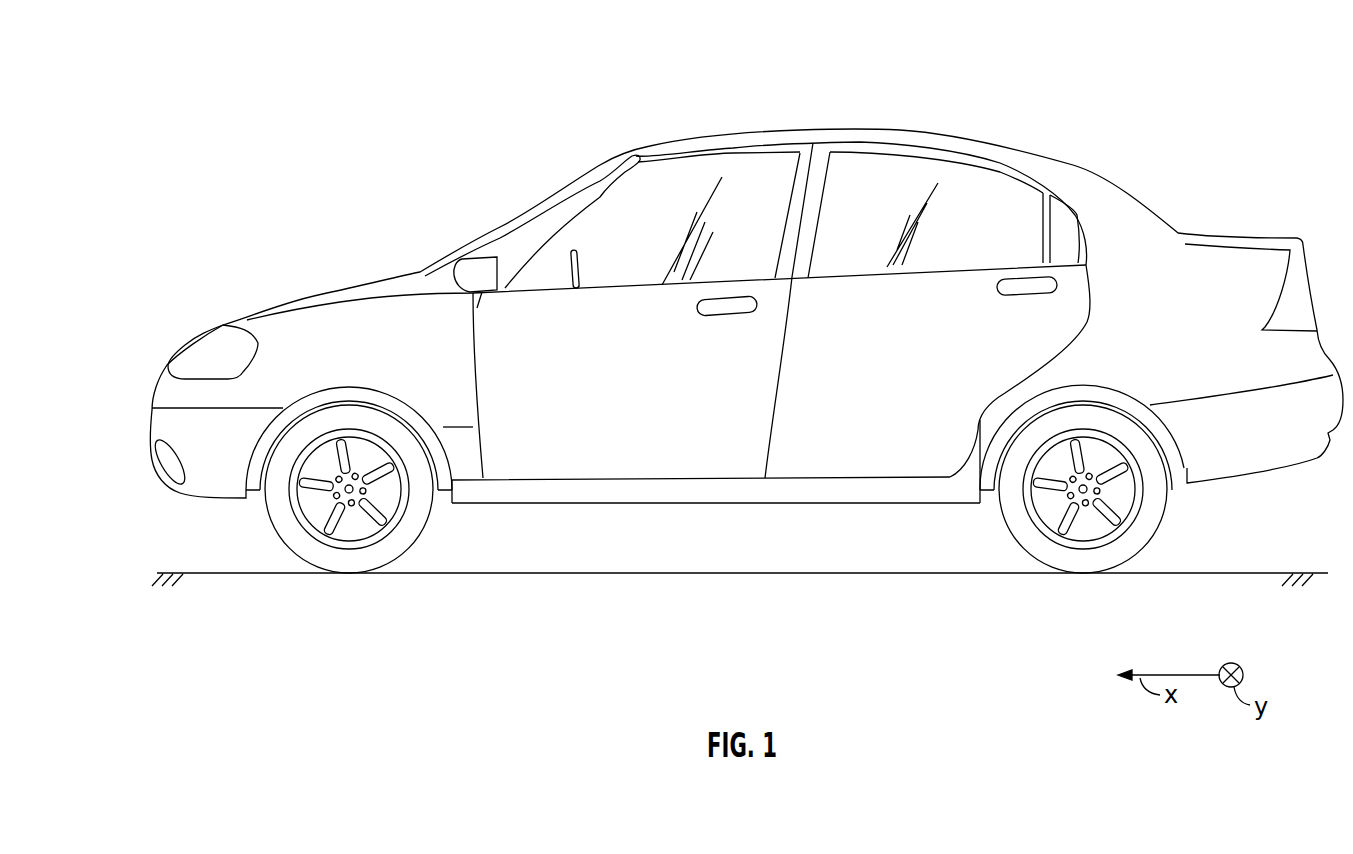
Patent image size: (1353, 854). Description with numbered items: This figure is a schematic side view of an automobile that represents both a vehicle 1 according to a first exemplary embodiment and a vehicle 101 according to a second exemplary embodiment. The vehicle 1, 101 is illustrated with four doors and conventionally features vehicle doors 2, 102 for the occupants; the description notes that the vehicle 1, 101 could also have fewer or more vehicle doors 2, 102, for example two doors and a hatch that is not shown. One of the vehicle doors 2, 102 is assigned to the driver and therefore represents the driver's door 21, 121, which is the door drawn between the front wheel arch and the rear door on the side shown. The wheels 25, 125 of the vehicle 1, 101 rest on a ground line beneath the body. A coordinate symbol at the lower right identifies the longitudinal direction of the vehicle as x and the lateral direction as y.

The vehicle 1 is at (746, 354).
The vehicle 101 is at (746, 354).
The vehicle door 2 is at (777, 409).
The vehicle door 102 is at (523, 460).
The driver's door 21 is at (716, 507).
The driver's door 121 is at (683, 460).
The wheel 25 is at (716, 515).
The wheel 125 is at (358, 553).